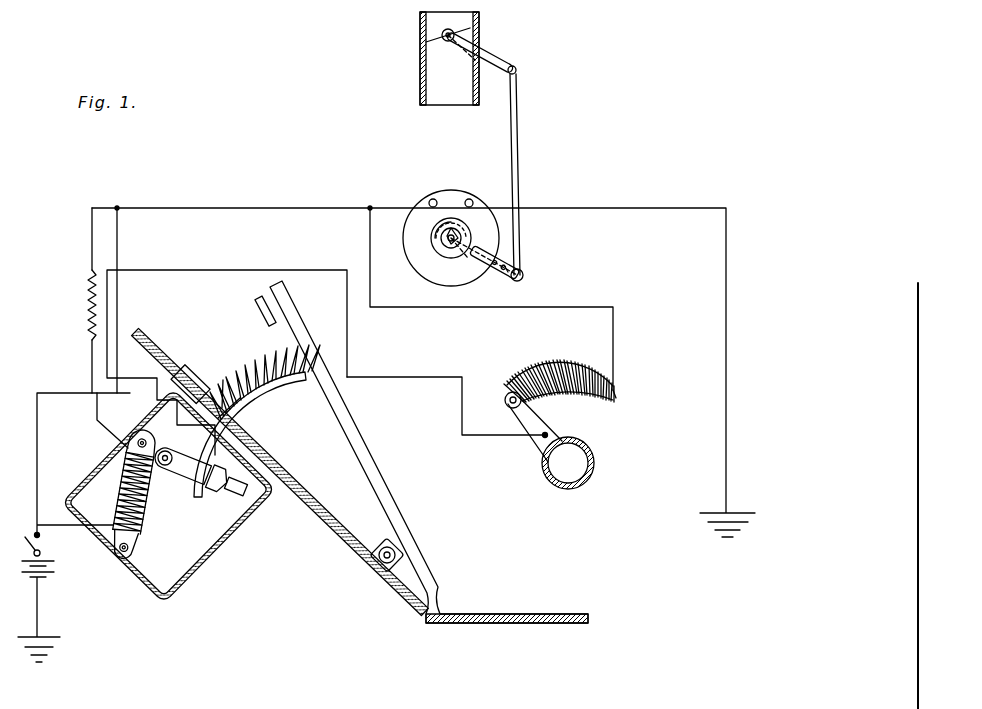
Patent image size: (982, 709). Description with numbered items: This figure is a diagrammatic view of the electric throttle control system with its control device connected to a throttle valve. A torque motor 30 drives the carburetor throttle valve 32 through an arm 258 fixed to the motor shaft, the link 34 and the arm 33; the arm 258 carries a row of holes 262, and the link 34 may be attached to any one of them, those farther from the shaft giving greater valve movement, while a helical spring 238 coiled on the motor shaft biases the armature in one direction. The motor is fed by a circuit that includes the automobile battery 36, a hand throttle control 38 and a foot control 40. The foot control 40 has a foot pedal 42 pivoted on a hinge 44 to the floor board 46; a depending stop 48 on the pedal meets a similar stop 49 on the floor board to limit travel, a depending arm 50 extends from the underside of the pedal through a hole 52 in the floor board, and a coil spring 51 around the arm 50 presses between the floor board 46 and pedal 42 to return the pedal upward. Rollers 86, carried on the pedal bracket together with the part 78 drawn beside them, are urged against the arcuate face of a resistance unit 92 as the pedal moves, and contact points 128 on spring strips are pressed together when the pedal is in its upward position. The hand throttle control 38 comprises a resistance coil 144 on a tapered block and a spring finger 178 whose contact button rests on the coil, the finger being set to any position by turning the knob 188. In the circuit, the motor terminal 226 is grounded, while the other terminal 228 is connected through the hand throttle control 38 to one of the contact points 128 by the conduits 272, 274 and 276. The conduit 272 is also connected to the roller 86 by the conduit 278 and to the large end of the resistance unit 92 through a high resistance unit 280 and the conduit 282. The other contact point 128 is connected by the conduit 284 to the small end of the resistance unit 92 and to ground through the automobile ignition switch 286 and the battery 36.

The torque motor 30 is at (452, 192).
The carburetor throttle valve 32 is at (480, 22).
The arm 33 is at (500, 55).
The link 34 is at (522, 190).
The battery 36 is at (60, 562).
The hand throttle control 38 is at (616, 400).
The foot control 40 is at (225, 545).
The foot pedal 42 is at (375, 482).
The hinge 44 is at (400, 553).
The floor board 46 is at (380, 588).
The depending stop 48 is at (264, 312).
The stop 49 is at (195, 362).
The depending arm 50 is at (257, 416).
The coil spring 51 is at (266, 368).
The hole 52 is at (238, 396).
The nut 78 is at (215, 492).
The rollers 86 is at (180, 478).
The resistance unit 92 is at (150, 480).
The contact points 128 is at (266, 455).
The resistance coil 144 is at (582, 366).
The spring finger 178 is at (539, 447).
The knob 188 is at (575, 480).
The terminal 226 is at (472, 200).
The terminal 228 is at (430, 200).
The helical spring 238 is at (464, 232).
The arm 258 is at (495, 278).
The holes 262 is at (505, 268).
The conduit 272 is at (315, 206).
The conduit 274 is at (400, 294).
The conduit 276 is at (447, 394).
The conduit 278 is at (120, 320).
The high resistance unit 280 is at (92, 300).
The conduit 282 is at (90, 355).
The conduit 284 is at (37, 485).
The automobile ignition switch 286 is at (20, 542).